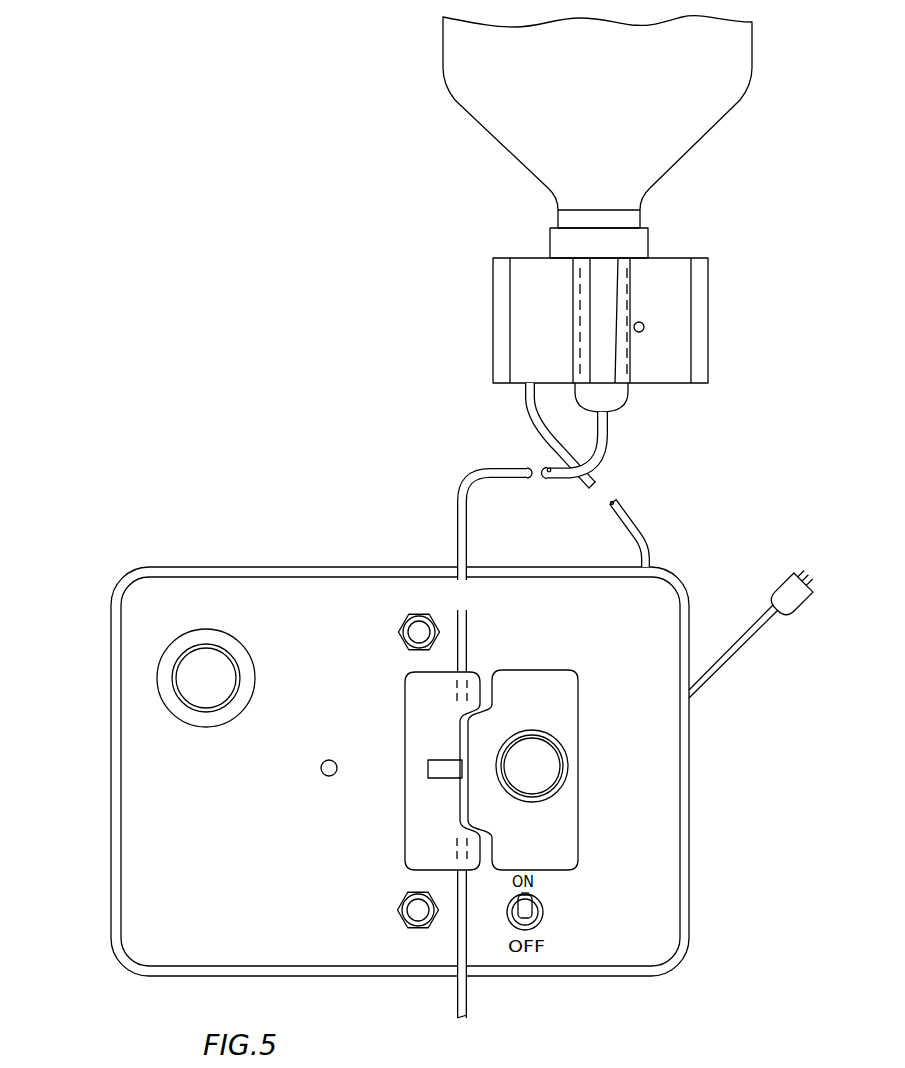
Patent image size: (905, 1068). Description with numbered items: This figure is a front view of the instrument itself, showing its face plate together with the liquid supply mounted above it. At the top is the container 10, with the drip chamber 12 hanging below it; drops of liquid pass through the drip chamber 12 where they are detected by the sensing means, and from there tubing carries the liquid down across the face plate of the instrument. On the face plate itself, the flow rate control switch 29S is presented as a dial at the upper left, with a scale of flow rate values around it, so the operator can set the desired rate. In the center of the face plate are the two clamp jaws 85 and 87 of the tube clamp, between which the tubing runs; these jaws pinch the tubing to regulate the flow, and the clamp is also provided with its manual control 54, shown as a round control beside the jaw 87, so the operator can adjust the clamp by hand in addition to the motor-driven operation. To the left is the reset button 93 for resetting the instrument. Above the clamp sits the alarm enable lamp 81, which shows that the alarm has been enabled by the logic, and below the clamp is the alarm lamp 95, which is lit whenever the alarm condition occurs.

The container 10 is at (673, 135).
The drip chamber 12 is at (603, 293).
The flow rate control switch 29S is at (157, 684).
The manual control 54 is at (570, 767).
The alarm enable lamp 81 is at (412, 610).
The clamp jaw 85 is at (437, 780).
The clamp jaw 87 is at (470, 792).
The reset button 93 is at (320, 770).
The alarm lamp 95 is at (398, 905).